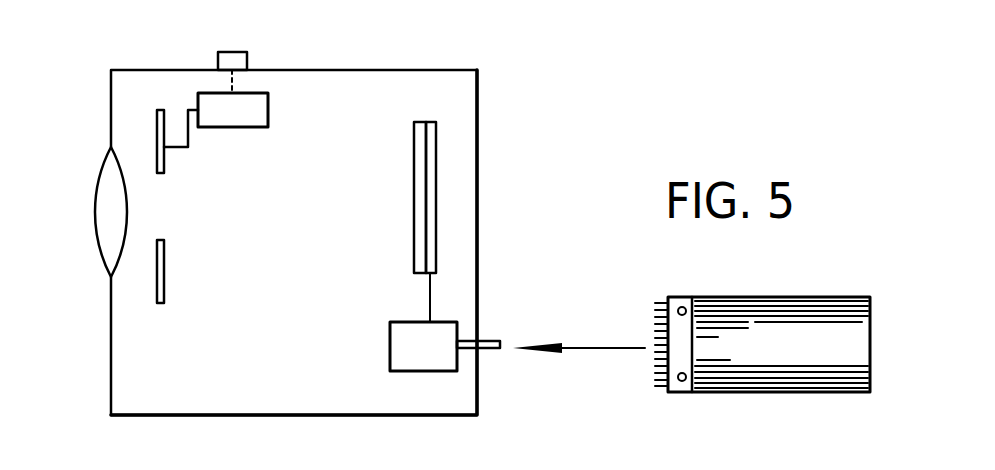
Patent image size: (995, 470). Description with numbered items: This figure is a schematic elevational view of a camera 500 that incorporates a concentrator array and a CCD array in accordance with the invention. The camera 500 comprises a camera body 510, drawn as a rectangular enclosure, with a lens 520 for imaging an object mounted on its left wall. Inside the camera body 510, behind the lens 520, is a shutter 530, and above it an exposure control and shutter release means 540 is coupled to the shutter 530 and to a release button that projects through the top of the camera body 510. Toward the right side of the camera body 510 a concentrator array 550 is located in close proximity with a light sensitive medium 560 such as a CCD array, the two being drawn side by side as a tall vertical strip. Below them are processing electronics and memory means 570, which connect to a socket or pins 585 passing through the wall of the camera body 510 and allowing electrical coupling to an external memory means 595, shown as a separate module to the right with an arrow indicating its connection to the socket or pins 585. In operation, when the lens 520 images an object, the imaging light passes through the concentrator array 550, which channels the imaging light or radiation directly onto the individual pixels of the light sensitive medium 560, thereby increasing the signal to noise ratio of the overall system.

The camera 500 is at (362, 60).
The camera body 510 is at (477, 110).
The lens 520 is at (103, 175).
The shutter 530 is at (166, 268).
The exposure control and shutter release means 540 is at (257, 110).
The concentrator array 550 is at (414, 253).
The light sensitive medium 560 is at (435, 246).
The processing electronics and memory means 570 is at (403, 348).
The socket or pin(s) 585 is at (488, 341).
The memory means 595 is at (805, 357).